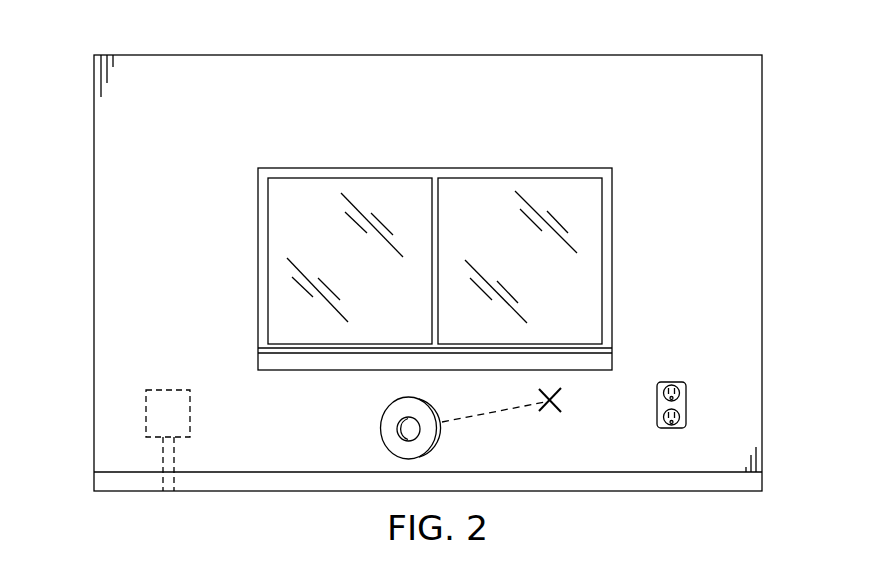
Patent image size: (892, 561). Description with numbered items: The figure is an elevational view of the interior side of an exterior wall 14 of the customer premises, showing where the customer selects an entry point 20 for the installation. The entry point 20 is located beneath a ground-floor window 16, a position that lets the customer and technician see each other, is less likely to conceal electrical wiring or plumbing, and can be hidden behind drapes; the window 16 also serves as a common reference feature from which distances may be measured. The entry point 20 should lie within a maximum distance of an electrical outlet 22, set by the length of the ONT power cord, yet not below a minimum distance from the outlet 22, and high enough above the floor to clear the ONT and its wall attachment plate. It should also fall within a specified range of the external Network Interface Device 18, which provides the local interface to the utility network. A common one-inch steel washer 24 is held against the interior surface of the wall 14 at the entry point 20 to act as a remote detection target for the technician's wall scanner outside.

The exterior wall 14 is at (207, 124).
The ground-floor window 16 is at (613, 208).
The external Network Interface Device (NID) 18 is at (143, 410).
The entry point 20 is at (542, 410).
The electrical outlet 22 is at (686, 395).
The steel washer 24 is at (378, 436).